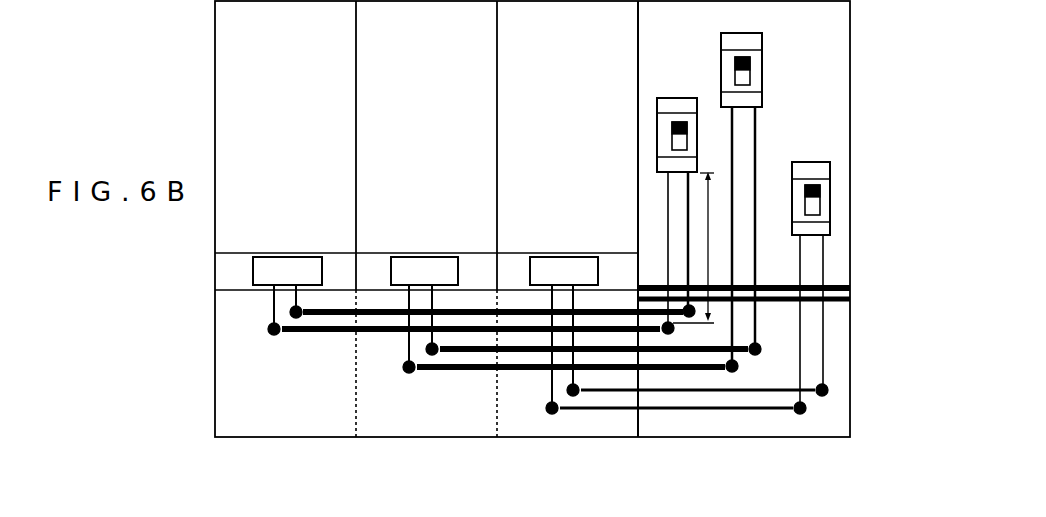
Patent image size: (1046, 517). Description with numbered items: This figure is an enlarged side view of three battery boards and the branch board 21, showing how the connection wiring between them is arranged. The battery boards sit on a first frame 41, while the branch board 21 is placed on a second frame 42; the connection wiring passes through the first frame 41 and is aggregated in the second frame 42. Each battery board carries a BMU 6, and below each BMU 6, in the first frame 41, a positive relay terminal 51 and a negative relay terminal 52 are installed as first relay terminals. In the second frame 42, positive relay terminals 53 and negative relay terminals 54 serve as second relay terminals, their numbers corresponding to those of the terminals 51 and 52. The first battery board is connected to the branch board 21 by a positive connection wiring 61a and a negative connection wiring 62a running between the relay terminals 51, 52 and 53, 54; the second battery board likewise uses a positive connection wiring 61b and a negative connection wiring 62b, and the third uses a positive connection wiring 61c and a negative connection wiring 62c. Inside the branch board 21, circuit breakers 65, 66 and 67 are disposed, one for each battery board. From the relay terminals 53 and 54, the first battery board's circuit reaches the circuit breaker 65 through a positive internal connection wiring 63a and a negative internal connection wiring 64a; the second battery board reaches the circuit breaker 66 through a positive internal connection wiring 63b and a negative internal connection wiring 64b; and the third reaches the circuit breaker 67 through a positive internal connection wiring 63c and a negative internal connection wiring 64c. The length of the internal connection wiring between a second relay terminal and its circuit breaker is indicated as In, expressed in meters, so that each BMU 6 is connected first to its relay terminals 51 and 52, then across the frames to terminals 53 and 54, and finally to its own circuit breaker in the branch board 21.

The branch board 21 is at (850, 46).
The first frame 41 is at (213, 412).
The second frame 42 is at (760, 439).
The positive relay terminal 51 is at (290, 309).
The negative relay terminal 52 is at (268, 328).
The positive relay terminal 53 is at (851, 392).
The negative relay terminal 54 is at (851, 422).
The BMU 6 is at (282, 250).
The positive connection wiring 61a is at (622, 393).
The positive connection wiring 61b is at (488, 352).
The positive connection wiring 61c is at (334, 318).
The negative connection wiring 62a is at (583, 412).
The negative connection wiring 62b is at (447, 372).
The negative connection wiring 62c is at (297, 338).
The positive internal connection wiring 63a is at (851, 322).
The positive internal connection wiring 63b is at (757, 122).
The positive internal connection wiring 63c is at (688, 190).
The negative internal connection wiring 64a is at (851, 352).
The negative internal connection wiring 64b is at (734, 138).
The negative internal connection wiring 64c is at (668, 213).
The circuit breaker 65 is at (832, 185).
The circuit breaker 66 is at (763, 72).
The circuit breaker 67 is at (656, 118).
The length of internal connection wiring In is at (706, 252).